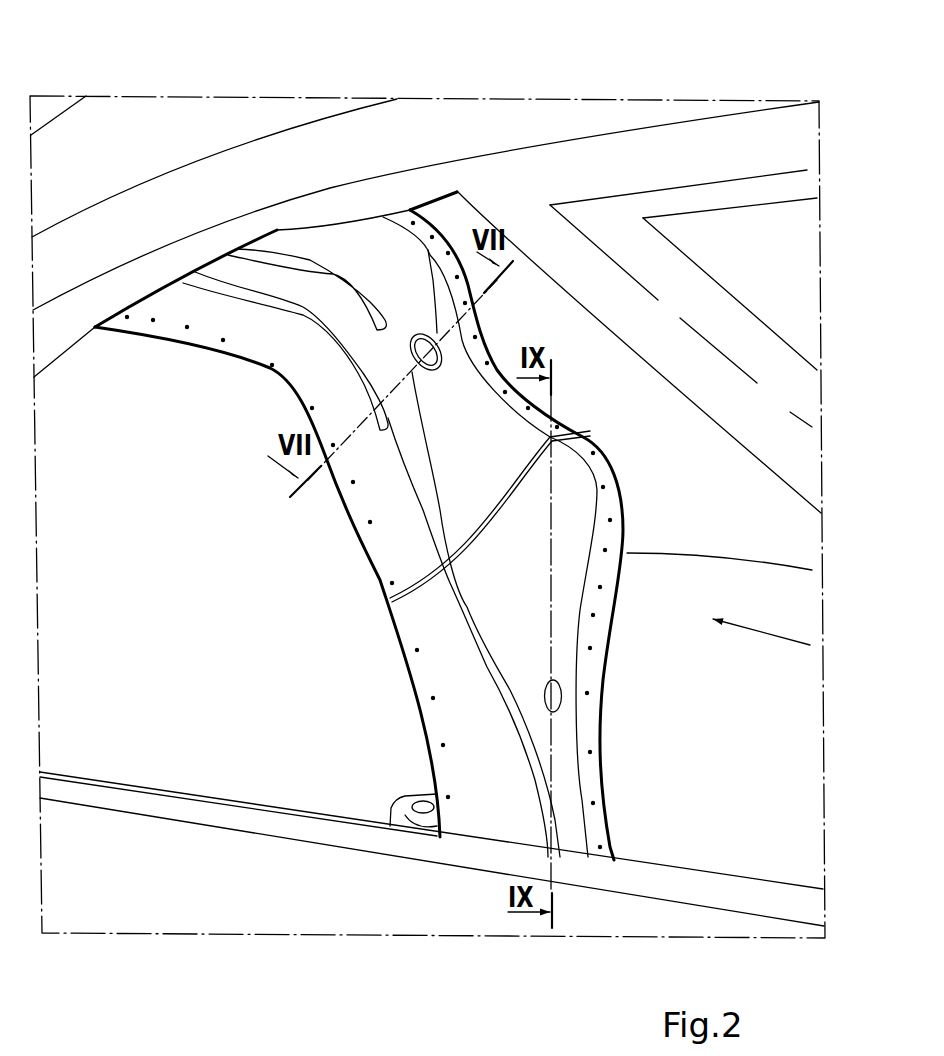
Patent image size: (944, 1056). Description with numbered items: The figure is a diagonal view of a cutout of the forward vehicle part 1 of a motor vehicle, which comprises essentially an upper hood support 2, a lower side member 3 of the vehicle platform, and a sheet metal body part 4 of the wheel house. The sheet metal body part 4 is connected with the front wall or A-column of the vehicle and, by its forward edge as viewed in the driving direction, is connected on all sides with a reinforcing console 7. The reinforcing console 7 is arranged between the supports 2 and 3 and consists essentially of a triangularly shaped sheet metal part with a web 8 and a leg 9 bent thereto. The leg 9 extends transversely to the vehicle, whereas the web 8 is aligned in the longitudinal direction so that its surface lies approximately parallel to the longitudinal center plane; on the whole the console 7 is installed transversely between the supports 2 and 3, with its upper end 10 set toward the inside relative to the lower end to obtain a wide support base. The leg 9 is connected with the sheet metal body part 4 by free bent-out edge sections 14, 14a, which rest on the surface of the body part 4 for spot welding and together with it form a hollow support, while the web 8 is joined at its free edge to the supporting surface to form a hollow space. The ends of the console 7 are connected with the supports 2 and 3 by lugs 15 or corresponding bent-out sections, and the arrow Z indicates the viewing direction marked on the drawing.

The forward vehicle part 1 is at (360, 950).
The upper hood support 2 is at (292, 147).
The lower side member 3 is at (453, 908).
The sheet metal body part 4 is at (652, 420).
The reinforcing console 7 is at (410, 706).
The web 8 is at (459, 676).
The leg 9 is at (530, 576).
The upper end 10 is at (131, 284).
The free bent-out edge section 14 is at (603, 608).
The free bent-out edge section 14a is at (476, 347).
The lugs 15 is at (188, 295).
The viewing direction Z is at (761, 649).